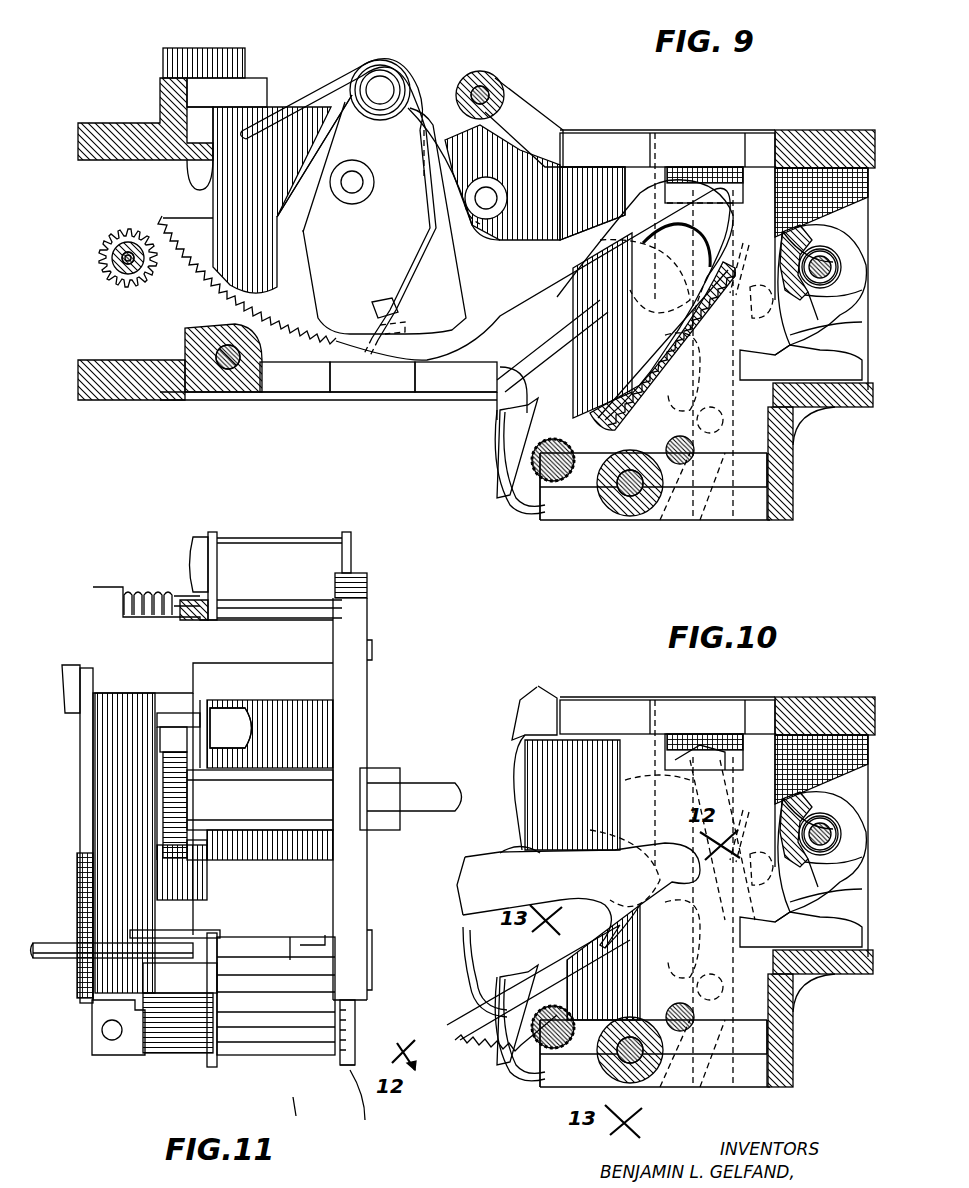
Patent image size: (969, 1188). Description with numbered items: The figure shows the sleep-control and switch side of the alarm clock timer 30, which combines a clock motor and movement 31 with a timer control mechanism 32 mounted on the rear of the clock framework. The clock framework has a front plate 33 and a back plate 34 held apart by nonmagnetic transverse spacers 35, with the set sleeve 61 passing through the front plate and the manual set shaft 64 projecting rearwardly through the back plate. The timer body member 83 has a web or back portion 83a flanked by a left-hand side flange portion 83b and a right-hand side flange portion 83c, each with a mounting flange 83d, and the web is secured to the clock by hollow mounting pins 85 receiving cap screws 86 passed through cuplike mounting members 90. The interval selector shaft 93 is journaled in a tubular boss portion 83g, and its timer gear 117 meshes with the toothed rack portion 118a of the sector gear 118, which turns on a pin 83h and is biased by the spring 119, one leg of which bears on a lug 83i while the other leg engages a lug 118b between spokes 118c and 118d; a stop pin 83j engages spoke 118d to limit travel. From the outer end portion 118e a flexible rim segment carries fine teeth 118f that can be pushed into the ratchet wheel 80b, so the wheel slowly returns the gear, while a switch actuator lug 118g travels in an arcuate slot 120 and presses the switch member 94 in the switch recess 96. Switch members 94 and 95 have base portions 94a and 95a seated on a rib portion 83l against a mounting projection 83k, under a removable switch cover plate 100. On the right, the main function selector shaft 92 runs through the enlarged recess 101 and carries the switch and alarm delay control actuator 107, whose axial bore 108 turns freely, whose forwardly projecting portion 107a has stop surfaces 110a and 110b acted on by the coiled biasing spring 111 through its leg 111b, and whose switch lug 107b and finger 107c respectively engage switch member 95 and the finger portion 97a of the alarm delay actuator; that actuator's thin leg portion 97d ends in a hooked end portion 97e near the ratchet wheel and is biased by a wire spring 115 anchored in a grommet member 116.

In FIG. 11, the alarm clock timer 30 is at (296, 1120).
In FIG. 11, the clock motor and movement 31 is at (365, 1109).
In FIG. 11, the timer control mechanism 32 is at (98, 585).
In FIG. 11, the front plate 33 is at (345, 1067).
In FIG. 11, the back plate 34 is at (210, 1068).
In FIG. 11, the transverse spacers 35 is at (298, 518).
In FIG. 11, the set sleeve 61 is at (377, 832).
In FIG. 11, the manual set shaft 64 is at (46, 961).
In FIG. 9, the toothed ratchet wheel 80b is at (553, 483).
In FIG. 10, the toothed ratchet wheel 80b is at (553, 1050).
In FIG. 9, the body member 83 is at (372, 393).
In FIG. 11, the body member 83 is at (92, 606).
In FIG. 10, the body member 83 is at (575, 700).
In FIG. 9, the web or back portion 83a is at (478, 380).
In FIG. 11, the web or back portion 83a is at (94, 750).
In FIG. 10, the web or back portion 83a is at (515, 740).
In FIG. 9, the left-hand side flange portion 83b is at (96, 123).
In FIG. 11, the left-hand side flange portion 83b is at (205, 665).
In FIG. 9, the right-hand side flange portion 83c is at (855, 131).
In FIG. 10, the right-hand side flange portion 83c is at (830, 869).
In FIG. 11, the mounting flange 83d is at (370, 592).
In FIG. 9, the tubular boss portion 83g is at (112, 258).
In FIG. 11, the tubular boss portion 83g is at (278, 823).
In FIG. 9, the pin 83h is at (380, 62).
In FIG. 9, the lug or projection 83i is at (252, 84).
In FIG. 9, the stop pin 83j is at (352, 183).
In FIG. 9, the mounting pin or projection 83k is at (708, 502).
In FIG. 10, the mounting pin or projection 83k is at (718, 1080).
In FIG. 9, the rib portion 83l is at (667, 452).
In FIG. 10, the rib portion 83l is at (780, 1005).
In FIG. 9, the mounting pins 85 is at (500, 80).
In FIG. 10, the mounting pins 85 is at (630, 1080).
In FIG. 9, the cap screw 86 is at (479, 72).
In FIG. 10, the cap screw 86 is at (640, 1085).
In FIG. 11, the cuplike mounting member 90 is at (312, 940).
In FIG. 9, the main function selector shaft 92 is at (842, 263).
In FIG. 10, the main function selector shaft 92 is at (849, 834).
In FIG. 9, the interval selector shaft 93 is at (115, 268).
In FIG. 11, the interval selector shaft 93 is at (412, 790).
In FIG. 9, the switch member 94 is at (700, 212).
In FIG. 11, the switch member 94 is at (90, 1028).
In FIG. 10, the switch member 94 is at (655, 777).
In FIG. 9, the base portion 94a is at (690, 402).
In FIG. 10, the base portion 94a is at (676, 939).
In FIG. 9, the switch member 95 is at (770, 320).
In FIG. 10, the switch member 95 is at (731, 922).
In FIG. 9, the base portion 95a is at (726, 402).
In FIG. 10, the base portion 95a is at (735, 975).
In FIG. 9, the switch recess 96 is at (656, 133).
In FIG. 10, the switch recess 96 is at (648, 700).
In FIG. 9, the finger portion 97a is at (838, 410).
In FIG. 10, the finger portion 97a is at (819, 1006).
In FIG. 9, the thin leg portion 97d is at (503, 440).
In FIG. 10, the thin leg portion 97d is at (495, 972).
In FIG. 9, the hooked end portion 97e is at (524, 502).
In FIG. 10, the hooked end portion 97e is at (520, 1068).
In FIG. 9, the switch cover plate 100 is at (870, 172).
In FIG. 11, the switch cover plate 100 is at (84, 776).
In FIG. 10, the switch cover plate 100 is at (842, 837).
In FIG. 9, the enlarged recess 101 is at (797, 130).
In FIG. 10, the enlarged recess 101 is at (825, 700).
In FIG. 9, the switch and alarm delay control actuator 107 is at (867, 340).
In FIG. 10, the switch and alarm delay control actuator 107 is at (841, 860).
In FIG. 9, the forwardly projecting portion 107a is at (750, 283).
In FIG. 10, the forwardly projecting portion 107a is at (751, 847).
In FIG. 9, the switch lug 107b is at (867, 197).
In FIG. 10, the switch lug 107b is at (845, 769).
In FIG. 9, the finger 107c is at (867, 366).
In FIG. 10, the finger 107c is at (827, 929).
In FIG. 9, the axial bore 108 is at (867, 240).
In FIG. 10, the axial bore 108 is at (844, 829).
In FIG. 9, the radial stop surface 110a is at (867, 219).
In FIG. 10, the radial stop surface 110a is at (849, 800).
In FIG. 9, the radial stop surface 110b is at (867, 295).
In FIG. 10, the radial stop surface 110b is at (853, 852).
In FIG. 9, the coiled biasing spring 111 is at (867, 277).
In FIG. 10, the coiled biasing spring 111 is at (854, 834).
In FIG. 9, the spring leg 111b is at (867, 317).
In FIG. 10, the spring leg 111b is at (860, 875).
In FIG. 11, the wire spring 115 is at (200, 928).
In FIG. 11, the grommet member 116 is at (205, 917).
In FIG. 9, the timer gear 117 is at (118, 306).
In FIG. 11, the timer gear 117 is at (160, 795).
In FIG. 9, the sector gear 118 is at (538, 320).
In FIG. 11, the sector gear 118 is at (180, 590).
In FIG. 10, the sector gear 118 is at (464, 880).
In FIG. 9, the toothed rack portion 118a is at (172, 225).
In FIG. 11, the toothed rack portion 118a is at (207, 862).
In FIG. 9, the lug 118b is at (394, 318).
In FIG. 9, the spoke 118c is at (320, 147).
In FIG. 11, the spoke 118c is at (173, 740).
In FIG. 9, the spoke 118d is at (452, 182).
In FIG. 9, the outer end portion 118e is at (617, 213).
In FIG. 10, the outer end portion 118e is at (505, 852).
In FIG. 9, the rack of fine teeth 118f is at (600, 362).
In FIG. 10, the rack of fine teeth 118f is at (500, 1000).
In FIG. 9, the switch actuator lug 118g is at (630, 296).
In FIG. 10, the switch actuator lug 118g is at (598, 897).
In FIG. 9, the spring 119 is at (410, 70).
In FIG. 11, the spring 119 is at (148, 590).
In FIG. 9, the arcuate slot 120 is at (656, 268).
In FIG. 10, the arcuate slot 120 is at (650, 850).